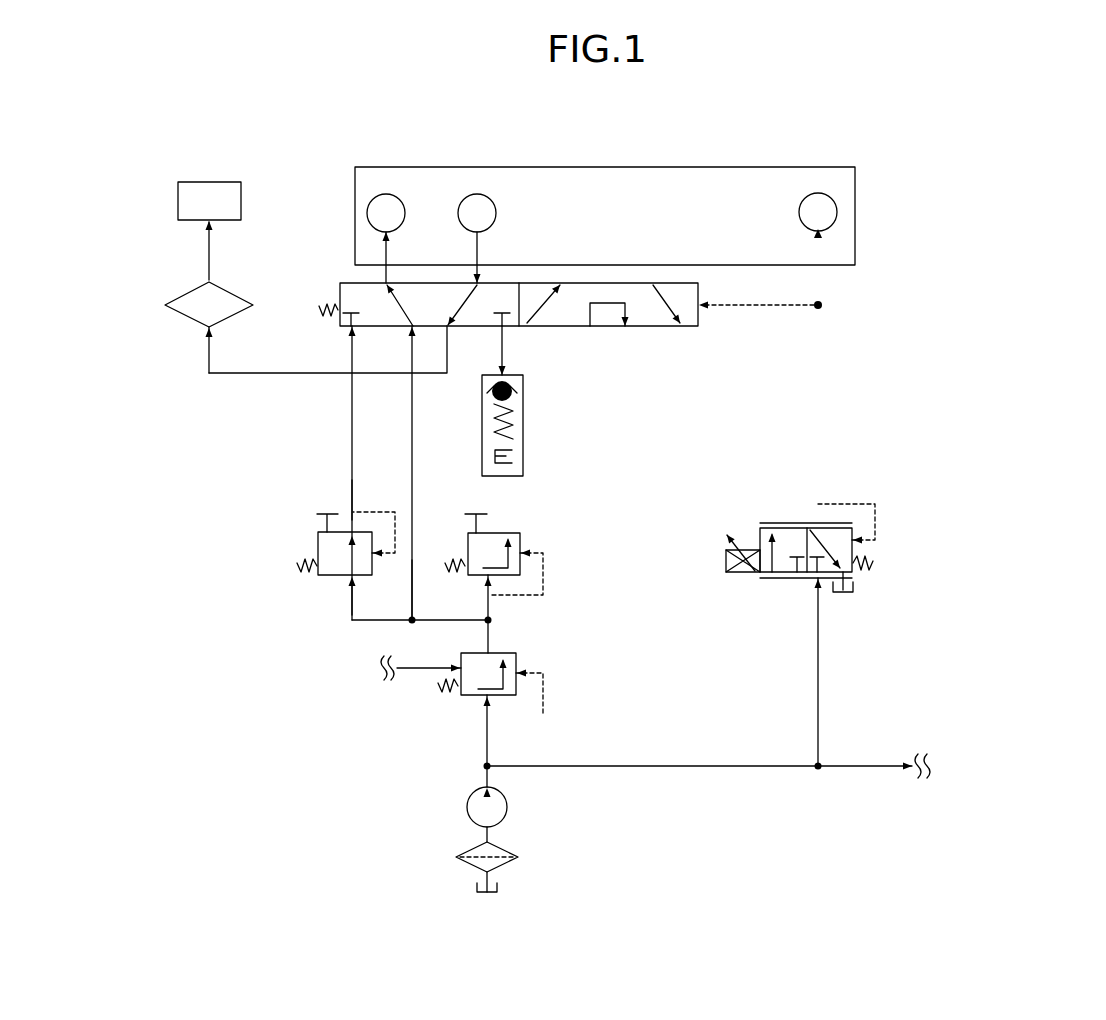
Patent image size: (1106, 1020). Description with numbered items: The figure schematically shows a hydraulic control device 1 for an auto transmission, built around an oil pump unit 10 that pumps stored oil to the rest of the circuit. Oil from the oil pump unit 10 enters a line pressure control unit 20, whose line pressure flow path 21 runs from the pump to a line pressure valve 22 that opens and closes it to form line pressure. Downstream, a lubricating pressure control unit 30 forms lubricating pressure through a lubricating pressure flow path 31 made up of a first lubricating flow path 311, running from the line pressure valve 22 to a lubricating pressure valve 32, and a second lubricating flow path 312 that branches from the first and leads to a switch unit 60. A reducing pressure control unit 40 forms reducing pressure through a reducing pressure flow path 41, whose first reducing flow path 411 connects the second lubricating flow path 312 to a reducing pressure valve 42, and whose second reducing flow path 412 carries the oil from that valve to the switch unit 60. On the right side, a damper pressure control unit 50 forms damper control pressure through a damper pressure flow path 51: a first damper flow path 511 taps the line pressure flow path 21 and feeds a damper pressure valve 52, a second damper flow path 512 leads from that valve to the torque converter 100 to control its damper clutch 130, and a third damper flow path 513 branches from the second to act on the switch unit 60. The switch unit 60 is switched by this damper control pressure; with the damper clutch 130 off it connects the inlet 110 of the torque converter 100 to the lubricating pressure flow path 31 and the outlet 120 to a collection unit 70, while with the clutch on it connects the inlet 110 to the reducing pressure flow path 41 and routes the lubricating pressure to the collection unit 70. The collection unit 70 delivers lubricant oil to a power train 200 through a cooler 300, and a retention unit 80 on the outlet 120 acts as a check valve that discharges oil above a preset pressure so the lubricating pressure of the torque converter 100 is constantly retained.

The hydraulic control device 1 is at (1040, 100).
The oil pump unit 10 is at (467, 807).
The line pressure control unit 20 is at (610, 685).
The line pressure flow path 21 is at (489, 738).
The line pressure valve 22 is at (517, 688).
The lubricating pressure control unit 30 is at (650, 558).
The lubricating pressure flow path 31 is at (598, 580).
The first lubricating flow path 311 is at (490, 632).
The second lubricating flow path 312 is at (413, 592).
The lubricating pressure valve 32 is at (521, 535).
The reducing pressure control unit 40 is at (192, 465).
The reducing pressure flow path 41 is at (242, 490).
The first reducing flow path 411 is at (352, 600).
The second reducing flow path 412 is at (352, 497).
The reducing pressure valve 42 is at (368, 531).
The damper pressure control unit 50 is at (1035, 408).
The damper pressure flow path 51 is at (983, 372).
The first damper flow path 511 is at (822, 612).
The second damper flow path 512 is at (818, 415).
The third damper flow path 513 is at (778, 306).
The damper pressure valve 52 is at (777, 580).
The switch unit 60 is at (648, 333).
The collection unit 70 is at (209, 356).
The retention unit 80 is at (524, 432).
The torque converter 100 is at (393, 167).
The inlet 110 is at (401, 199).
The outlet 120 is at (493, 199).
The damper clutch 130 is at (818, 192).
The power train 200 is at (178, 201).
The cooler 300 is at (232, 292).